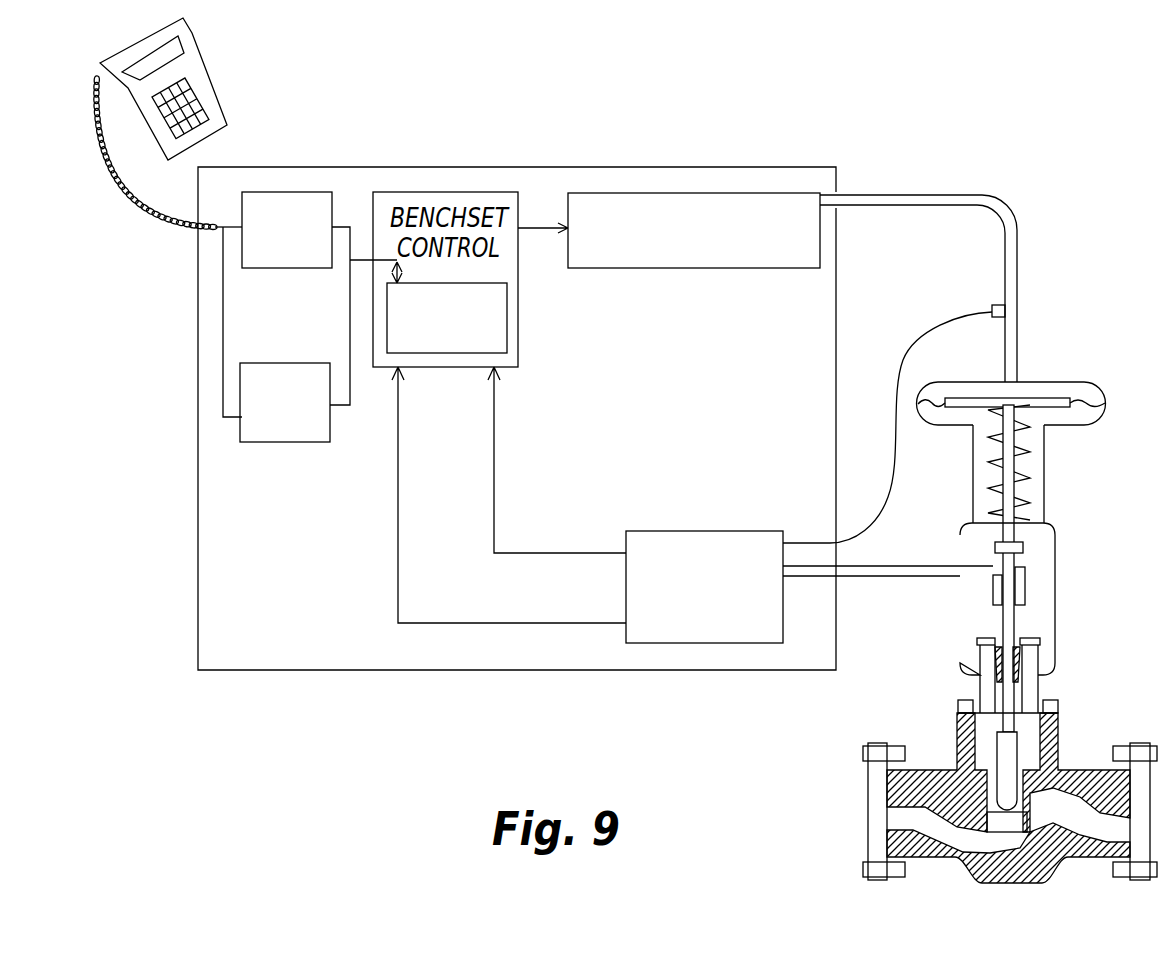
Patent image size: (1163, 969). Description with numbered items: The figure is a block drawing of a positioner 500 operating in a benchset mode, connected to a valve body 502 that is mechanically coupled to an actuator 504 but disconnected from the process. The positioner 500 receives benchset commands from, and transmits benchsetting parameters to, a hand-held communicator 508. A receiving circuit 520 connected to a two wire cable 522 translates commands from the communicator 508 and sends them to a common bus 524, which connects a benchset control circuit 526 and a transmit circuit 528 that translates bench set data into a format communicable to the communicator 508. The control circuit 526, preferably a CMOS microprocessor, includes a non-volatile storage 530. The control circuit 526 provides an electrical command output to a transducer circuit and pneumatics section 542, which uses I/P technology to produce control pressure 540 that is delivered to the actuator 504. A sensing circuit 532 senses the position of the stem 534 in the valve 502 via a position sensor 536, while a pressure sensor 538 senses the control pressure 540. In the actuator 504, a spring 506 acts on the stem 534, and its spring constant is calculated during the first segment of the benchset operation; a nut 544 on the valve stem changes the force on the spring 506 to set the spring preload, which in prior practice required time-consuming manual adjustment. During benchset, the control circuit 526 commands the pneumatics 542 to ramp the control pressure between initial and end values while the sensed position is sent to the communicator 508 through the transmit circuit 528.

The positioner 500 is at (643, 412).
The valve body 502 is at (1060, 732).
The actuator 504 is at (1045, 453).
The spring 506 is at (1023, 478).
The hand-held communicator 508 is at (212, 84).
The receiving circuit 520 is at (272, 192).
The two wire cable 522 is at (160, 228).
The common bus 524 is at (345, 240).
The benchset control circuit 526 is at (418, 370).
The transmit circuit 528 is at (263, 442).
The non-volatile storage 530 is at (463, 347).
The sensing circuit 532 is at (735, 632).
The stem 534 is at (1017, 620).
The position sensor 536 is at (850, 576).
The pressure sensor 538 is at (1000, 302).
The control pressure 540 is at (870, 192).
The transducer circuit and pneumatics section 542 is at (695, 268).
The nut 544 is at (1025, 548).